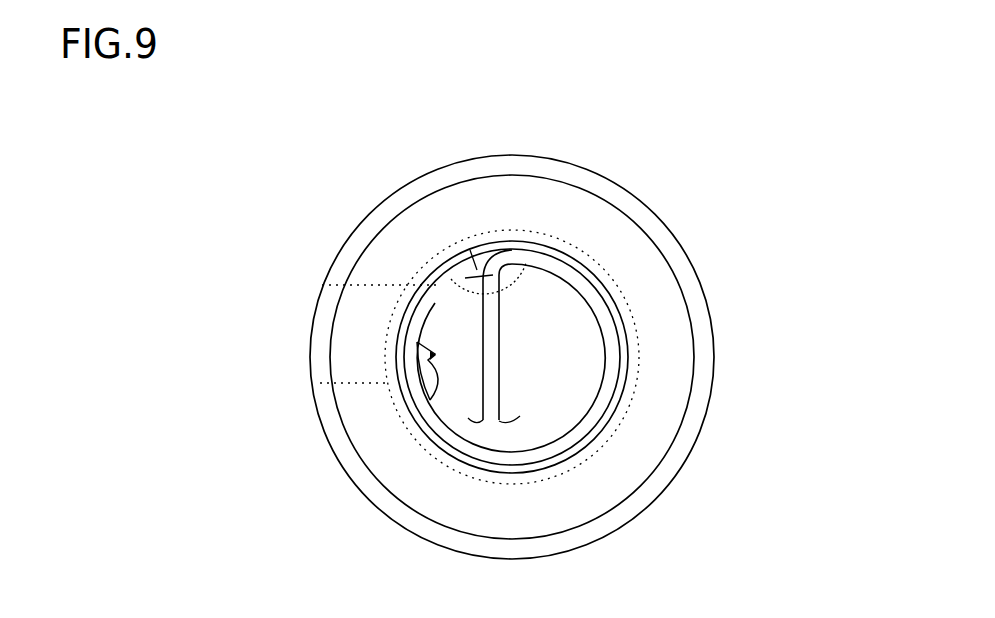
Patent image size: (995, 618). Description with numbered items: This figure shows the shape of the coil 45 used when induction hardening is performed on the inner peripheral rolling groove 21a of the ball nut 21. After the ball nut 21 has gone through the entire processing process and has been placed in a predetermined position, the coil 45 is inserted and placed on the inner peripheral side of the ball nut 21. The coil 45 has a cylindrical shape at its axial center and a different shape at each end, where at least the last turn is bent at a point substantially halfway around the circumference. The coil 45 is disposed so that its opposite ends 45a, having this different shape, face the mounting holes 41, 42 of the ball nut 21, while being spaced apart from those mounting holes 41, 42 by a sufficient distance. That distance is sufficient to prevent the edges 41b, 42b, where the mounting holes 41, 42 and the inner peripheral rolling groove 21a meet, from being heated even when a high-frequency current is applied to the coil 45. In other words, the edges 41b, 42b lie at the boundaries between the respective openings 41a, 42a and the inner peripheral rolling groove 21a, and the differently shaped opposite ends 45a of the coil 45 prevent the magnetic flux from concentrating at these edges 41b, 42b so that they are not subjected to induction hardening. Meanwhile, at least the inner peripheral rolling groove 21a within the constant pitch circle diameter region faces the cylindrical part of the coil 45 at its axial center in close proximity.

The ball nut 21 is at (680, 247).
The inner peripheral rolling groove 21a is at (447, 285).
The mounting hole 41 is at (400, 357).
The mounting hole 42 is at (355, 380).
The opening 41a is at (289, 393).
The opening 42a is at (430, 372).
The edge 41b is at (518, 176).
The edge 42b is at (520, 263).
The coil 45 is at (567, 273).
The opposite ends of the coil 45a is at (490, 366).